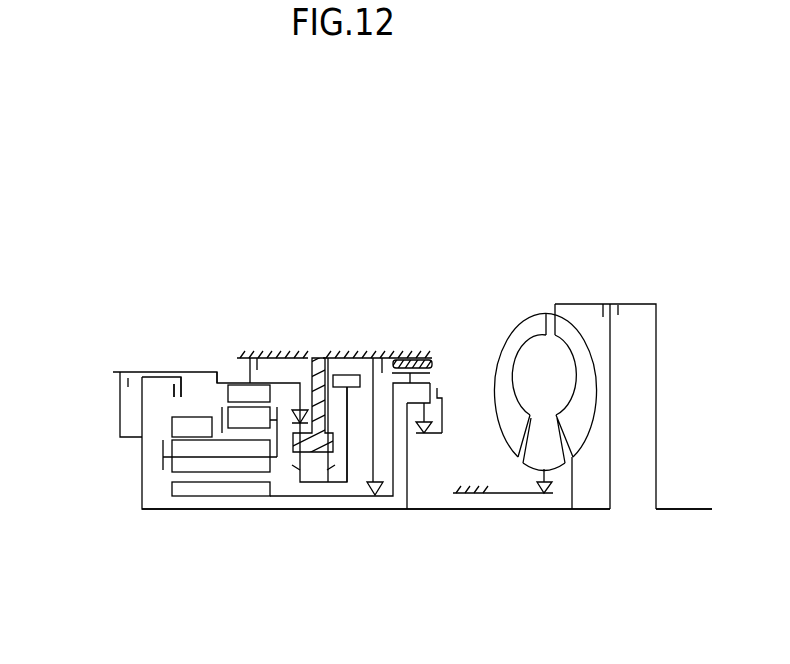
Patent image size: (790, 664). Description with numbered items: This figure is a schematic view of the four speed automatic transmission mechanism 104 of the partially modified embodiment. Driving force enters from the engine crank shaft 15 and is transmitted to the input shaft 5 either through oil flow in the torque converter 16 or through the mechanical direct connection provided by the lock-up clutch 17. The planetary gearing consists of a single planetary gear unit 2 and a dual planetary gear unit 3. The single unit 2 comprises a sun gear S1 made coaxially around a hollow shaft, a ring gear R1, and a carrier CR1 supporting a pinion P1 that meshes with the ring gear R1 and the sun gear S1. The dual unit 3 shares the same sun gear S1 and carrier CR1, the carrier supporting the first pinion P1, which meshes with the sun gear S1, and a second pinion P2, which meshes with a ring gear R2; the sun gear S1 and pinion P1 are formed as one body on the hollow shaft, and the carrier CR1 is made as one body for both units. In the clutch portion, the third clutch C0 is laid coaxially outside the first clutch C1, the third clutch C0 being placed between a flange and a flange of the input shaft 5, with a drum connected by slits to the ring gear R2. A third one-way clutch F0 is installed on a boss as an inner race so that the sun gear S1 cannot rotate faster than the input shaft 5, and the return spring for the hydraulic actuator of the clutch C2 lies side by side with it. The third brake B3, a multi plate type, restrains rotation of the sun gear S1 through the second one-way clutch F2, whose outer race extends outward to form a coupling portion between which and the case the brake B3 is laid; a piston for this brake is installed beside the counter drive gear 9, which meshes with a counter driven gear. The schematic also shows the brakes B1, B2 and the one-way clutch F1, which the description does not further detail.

The four speed automatic transmission mechanism 104 is at (187, 214).
The single planetary gear unit 2 is at (196, 390).
The dual planetary gear unit 3 is at (223, 365).
The input shaft 5 is at (408, 512).
The counter drive gear 9 is at (352, 375).
The engine crank shaft 15 is at (681, 506).
The torque converter 16 is at (521, 313).
The lock-up clutch 17 is at (618, 306).
The third clutch C0 is at (114, 382).
The first clutch C1 is at (157, 377).
The clutch C2 is at (439, 393).
The brake B1 is at (432, 365).
The brake B2 is at (240, 367).
The third brake B3 is at (376, 360).
The third one-way clutch F0 is at (428, 434).
The one-way clutch F1 is at (300, 408).
The second one-way clutch F2 is at (372, 495).
The ring gear R1 is at (185, 427).
The ring gear R2 is at (262, 393).
The first pinion P1 is at (188, 463).
The second pinion P2 is at (245, 428).
The sun gear S1 is at (203, 488).
The carrier CR1 is at (265, 435).